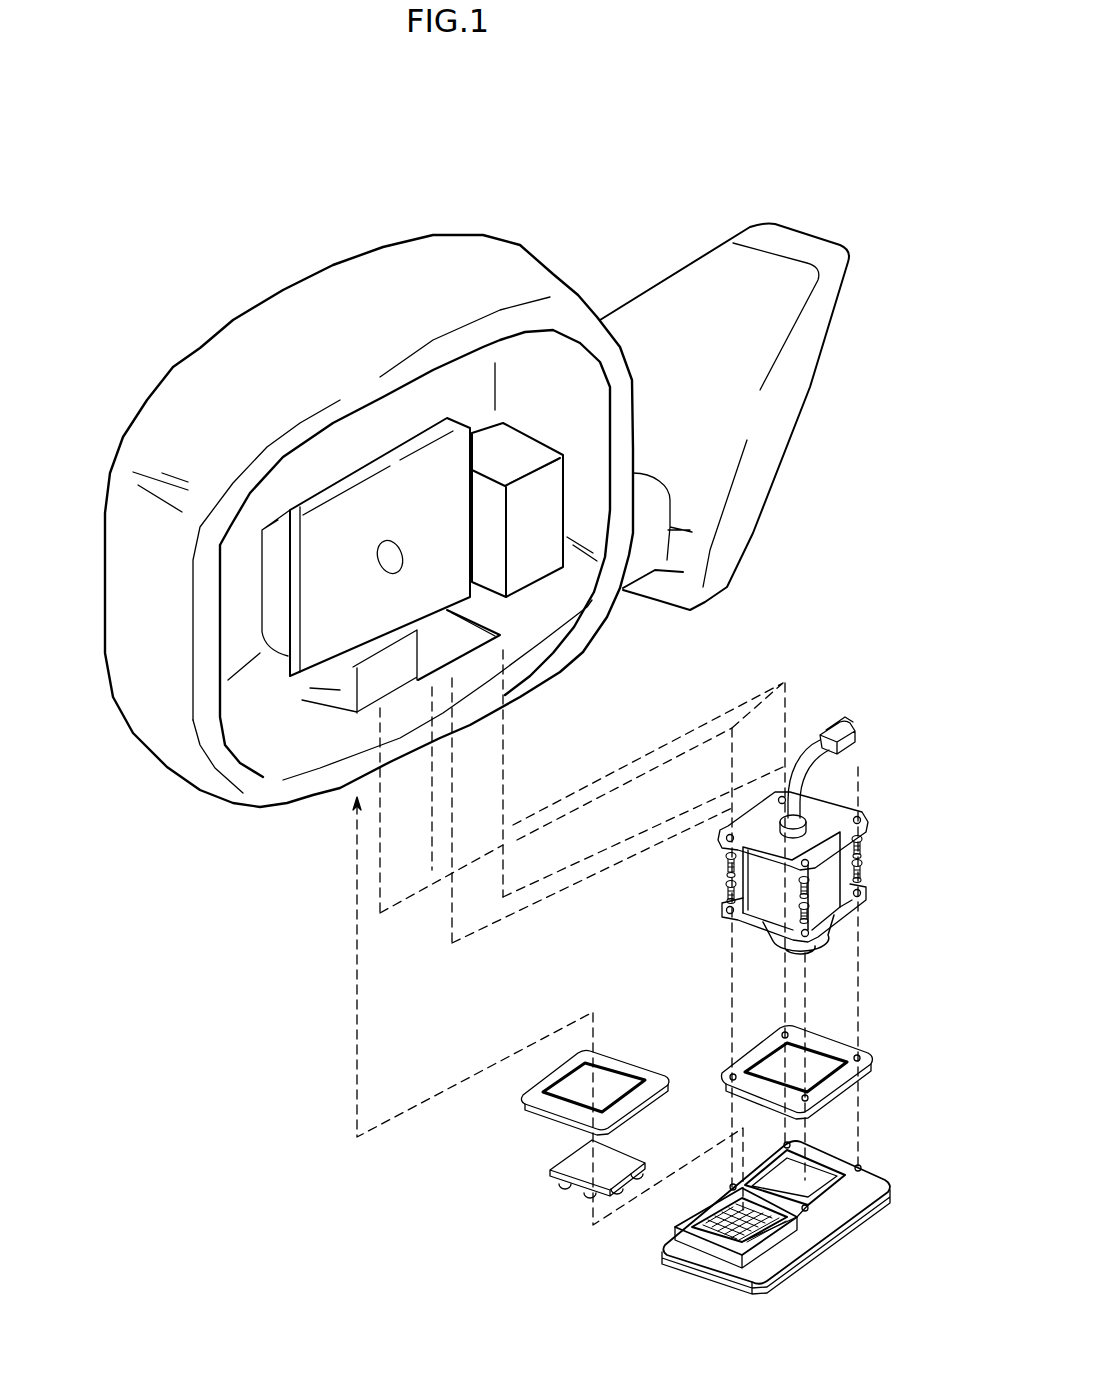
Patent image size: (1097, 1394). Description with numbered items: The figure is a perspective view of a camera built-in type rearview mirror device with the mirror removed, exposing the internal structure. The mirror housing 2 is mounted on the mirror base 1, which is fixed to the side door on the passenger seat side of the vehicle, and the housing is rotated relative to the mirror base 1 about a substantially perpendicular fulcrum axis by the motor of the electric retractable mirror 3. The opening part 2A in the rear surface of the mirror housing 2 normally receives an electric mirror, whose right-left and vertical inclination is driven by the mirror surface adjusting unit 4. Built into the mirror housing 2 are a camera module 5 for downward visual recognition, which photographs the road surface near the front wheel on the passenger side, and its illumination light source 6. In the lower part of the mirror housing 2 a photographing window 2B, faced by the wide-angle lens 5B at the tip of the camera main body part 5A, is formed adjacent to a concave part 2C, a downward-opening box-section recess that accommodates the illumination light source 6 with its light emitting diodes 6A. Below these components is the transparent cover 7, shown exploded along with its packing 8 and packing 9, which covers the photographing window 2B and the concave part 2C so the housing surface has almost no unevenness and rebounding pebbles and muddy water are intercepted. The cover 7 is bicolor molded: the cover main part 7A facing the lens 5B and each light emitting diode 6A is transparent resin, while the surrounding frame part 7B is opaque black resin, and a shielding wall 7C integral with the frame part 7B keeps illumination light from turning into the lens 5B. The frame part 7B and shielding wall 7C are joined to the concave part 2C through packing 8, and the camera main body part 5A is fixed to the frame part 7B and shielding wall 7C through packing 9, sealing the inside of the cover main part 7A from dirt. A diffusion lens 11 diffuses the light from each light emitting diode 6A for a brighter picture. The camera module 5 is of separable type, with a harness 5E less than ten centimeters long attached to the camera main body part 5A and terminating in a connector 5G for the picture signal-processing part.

The mirror base 1 is at (690, 287).
The mirror housing 2 is at (284, 291).
The opening part 2A is at (335, 738).
The photographing window 2B is at (475, 632).
The concave part 2C is at (345, 690).
The electric retractable mirror 3 is at (547, 453).
The mirror surface adjusting unit 4 is at (265, 593).
The camera module 5 is at (793, 815).
The camera main body part 5A is at (770, 900).
The lens 5B is at (790, 955).
The harness 5E is at (816, 745).
The connector 5G is at (835, 727).
The illumination light source 6 is at (555, 1198).
The light emitting diode 6A is at (590, 1196).
The transparent cover 7 is at (751, 1237).
The cover main part 7A is at (815, 1183).
The frame part 7B is at (693, 1215).
The shielding wall 7C is at (792, 1200).
The packing 8 is at (550, 1078).
The packing 9 is at (822, 1045).
The diffusion lens 11 is at (775, 1232).